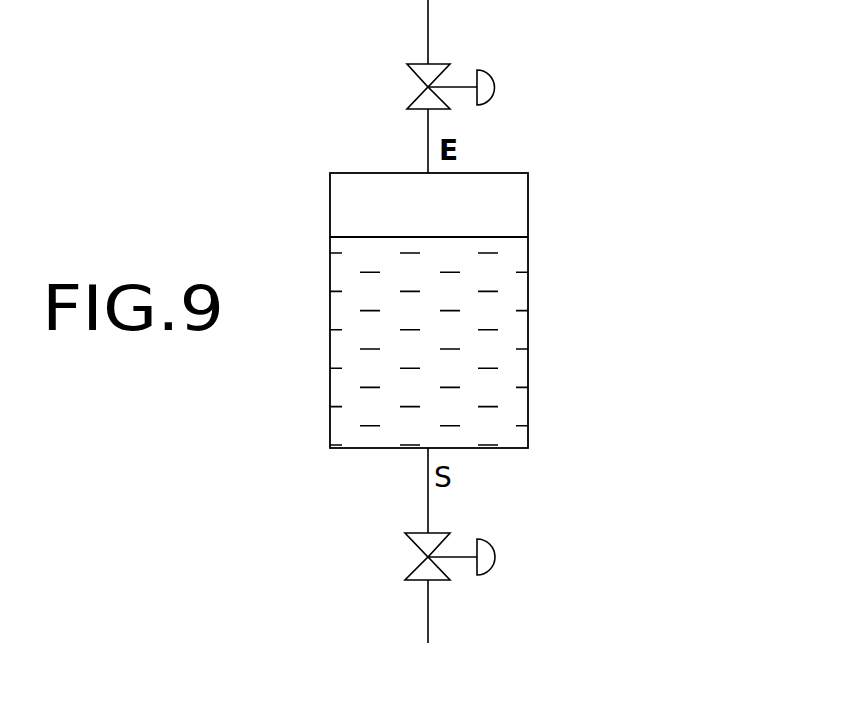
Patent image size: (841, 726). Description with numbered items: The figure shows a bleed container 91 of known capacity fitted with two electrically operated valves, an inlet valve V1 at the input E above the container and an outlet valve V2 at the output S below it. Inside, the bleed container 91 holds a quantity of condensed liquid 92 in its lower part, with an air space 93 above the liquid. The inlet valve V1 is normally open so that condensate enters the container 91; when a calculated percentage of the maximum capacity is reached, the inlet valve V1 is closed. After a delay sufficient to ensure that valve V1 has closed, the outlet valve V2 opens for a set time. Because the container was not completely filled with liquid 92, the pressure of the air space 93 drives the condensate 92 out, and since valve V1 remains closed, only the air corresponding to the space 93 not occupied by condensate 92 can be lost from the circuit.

The bleed container 91 is at (553, 330).
The condensed liquid 92 is at (478, 376).
The air space 93 is at (498, 221).
The inlet valve V1 is at (486, 86).
The outlet valve V2 is at (487, 558).